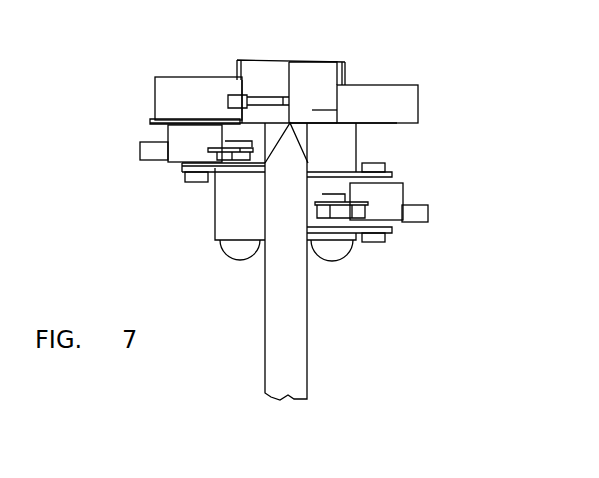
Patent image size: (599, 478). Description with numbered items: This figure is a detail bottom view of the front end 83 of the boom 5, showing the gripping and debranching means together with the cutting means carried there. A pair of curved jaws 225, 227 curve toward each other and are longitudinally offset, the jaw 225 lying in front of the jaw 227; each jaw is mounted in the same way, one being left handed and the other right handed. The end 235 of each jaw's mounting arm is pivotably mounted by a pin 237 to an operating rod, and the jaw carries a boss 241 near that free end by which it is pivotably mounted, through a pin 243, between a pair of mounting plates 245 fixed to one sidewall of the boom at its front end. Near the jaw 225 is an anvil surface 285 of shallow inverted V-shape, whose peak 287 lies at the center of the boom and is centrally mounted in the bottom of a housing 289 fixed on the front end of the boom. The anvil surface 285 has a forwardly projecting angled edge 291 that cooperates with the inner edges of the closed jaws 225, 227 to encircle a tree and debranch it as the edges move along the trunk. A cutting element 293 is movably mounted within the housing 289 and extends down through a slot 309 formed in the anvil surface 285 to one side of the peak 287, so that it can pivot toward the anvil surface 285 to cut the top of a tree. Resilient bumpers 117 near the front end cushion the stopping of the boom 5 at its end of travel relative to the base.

The boom 5 is at (305, 333).
The front end 83 is at (320, 121).
The resilient bumpers 117 is at (342, 262).
The curved jaw 225 is at (139, 152).
The curved jaw 227 is at (430, 212).
The end of arm 235 is at (312, 210).
The pin 237 is at (238, 140).
The boss 241 is at (167, 133).
The pin 243 is at (193, 184).
The mounting plates 245 is at (167, 122).
The anvil surface 285 is at (346, 66).
The peak 287 is at (314, 87).
The housing 289 is at (420, 103).
The angled edge 291 is at (281, 62).
The cutting element 293 is at (243, 101).
The slot 309 is at (234, 98).